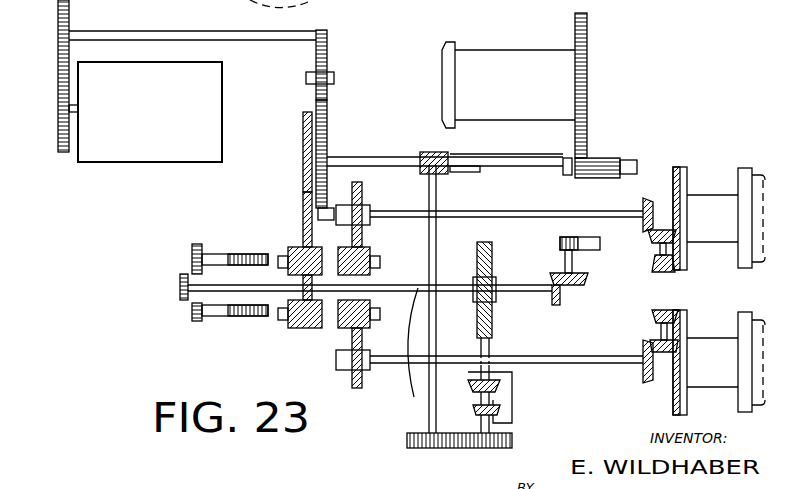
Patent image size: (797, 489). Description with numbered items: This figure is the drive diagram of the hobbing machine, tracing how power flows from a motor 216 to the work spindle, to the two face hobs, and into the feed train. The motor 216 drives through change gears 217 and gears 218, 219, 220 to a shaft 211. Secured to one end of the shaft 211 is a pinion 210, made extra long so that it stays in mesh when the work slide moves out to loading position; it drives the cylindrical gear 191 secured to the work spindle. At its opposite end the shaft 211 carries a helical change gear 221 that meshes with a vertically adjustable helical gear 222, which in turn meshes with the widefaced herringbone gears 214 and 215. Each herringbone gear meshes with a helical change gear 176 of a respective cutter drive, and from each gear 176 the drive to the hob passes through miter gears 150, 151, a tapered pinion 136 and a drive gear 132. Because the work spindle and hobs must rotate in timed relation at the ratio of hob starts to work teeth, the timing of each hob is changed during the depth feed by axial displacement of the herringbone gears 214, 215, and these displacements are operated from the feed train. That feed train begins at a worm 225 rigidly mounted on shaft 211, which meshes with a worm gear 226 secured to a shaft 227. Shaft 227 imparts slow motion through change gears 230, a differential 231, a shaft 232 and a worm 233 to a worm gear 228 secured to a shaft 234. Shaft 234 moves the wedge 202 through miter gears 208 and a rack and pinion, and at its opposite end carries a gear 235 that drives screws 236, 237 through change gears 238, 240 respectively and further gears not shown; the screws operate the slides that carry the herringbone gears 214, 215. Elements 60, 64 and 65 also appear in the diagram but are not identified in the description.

The drum 60 is at (449, 44).
The roll 64 is at (742, 318).
The roll 65 is at (748, 172).
The drive gear 132 is at (683, 170).
The tapered pinion 136 is at (668, 271).
The miter gear 150 is at (644, 206).
The miter gear 151 is at (660, 232).
The helical change gear 176 is at (362, 186).
The cylindrical gear 191 is at (585, 40).
The wedge 202 is at (600, 244).
The miter gears 208 is at (560, 295).
The pinion 210 is at (590, 162).
The shaft 211 is at (548, 164).
The herringbone gear 214 is at (322, 329).
The herringbone gear 215 is at (342, 246).
The motor 216 is at (184, 121).
The change gears 217 is at (60, 80).
The gear 218 is at (328, 42).
The gear 219 is at (328, 95).
The gear 220 is at (328, 128).
The helical change gear 221 is at (303, 124).
The helical gear 222 is at (305, 207).
The worm 225 is at (432, 154).
The worm gear 226 is at (474, 172).
The shaft 227 is at (431, 252).
The worm gear 228 is at (492, 255).
The change gears 230 is at (464, 449).
The differential 231 is at (512, 389).
The shaft 232 is at (490, 345).
The worm 233 is at (496, 296).
The shaft 234 is at (404, 351).
The gear 235 is at (180, 287).
The screw 236 is at (230, 317).
The screw 237 is at (262, 257).
The change gears 238 is at (192, 311).
The change gears 240 is at (192, 258).